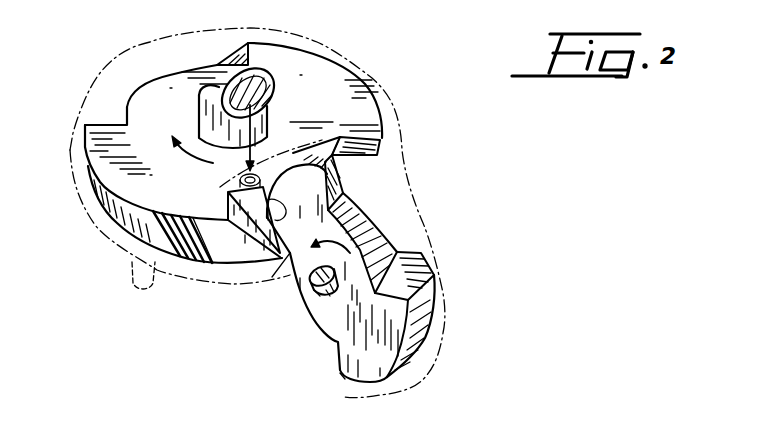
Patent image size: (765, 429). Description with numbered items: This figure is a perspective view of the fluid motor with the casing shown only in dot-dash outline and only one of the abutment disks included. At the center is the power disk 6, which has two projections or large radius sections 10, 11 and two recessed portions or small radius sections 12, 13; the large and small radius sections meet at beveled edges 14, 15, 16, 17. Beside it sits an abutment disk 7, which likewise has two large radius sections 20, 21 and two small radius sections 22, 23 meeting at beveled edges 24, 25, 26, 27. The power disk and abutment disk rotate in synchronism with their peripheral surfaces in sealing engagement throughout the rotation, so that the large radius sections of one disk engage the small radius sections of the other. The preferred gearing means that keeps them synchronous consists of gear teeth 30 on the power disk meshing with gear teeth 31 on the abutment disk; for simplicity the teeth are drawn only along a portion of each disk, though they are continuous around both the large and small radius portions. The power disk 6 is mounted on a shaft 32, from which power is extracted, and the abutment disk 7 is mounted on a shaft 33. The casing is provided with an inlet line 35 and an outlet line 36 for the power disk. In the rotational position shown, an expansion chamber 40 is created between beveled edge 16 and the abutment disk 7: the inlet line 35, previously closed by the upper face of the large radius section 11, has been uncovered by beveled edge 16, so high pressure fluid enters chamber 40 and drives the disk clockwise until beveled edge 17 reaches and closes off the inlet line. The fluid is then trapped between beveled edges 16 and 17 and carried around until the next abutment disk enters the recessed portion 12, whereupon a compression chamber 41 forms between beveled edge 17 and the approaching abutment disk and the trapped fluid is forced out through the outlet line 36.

The power disk 6 is at (363, 80).
The abutment disk 7 is at (437, 293).
The large radius section 10 is at (337, 112).
The large radius section 11 is at (168, 198).
The small radius section 12 is at (289, 158).
The small radius section 13 is at (185, 108).
The beveled edge 14 is at (241, 58).
The beveled edge 15 is at (116, 124).
The beveled edge 16 is at (260, 233).
The beveled edge 17 is at (343, 194).
The large radius section 20 is at (309, 205).
The large radius section 21 is at (386, 365).
The small radius section 22 is at (340, 323).
The small radius section 23 is at (367, 288).
The beveled edge 24 is at (335, 183).
The beveled edge 25 is at (272, 280).
The beveled edge 26 is at (338, 353).
The beveled edge 27 is at (412, 262).
The gear teeth 30 is at (184, 258).
The gear teeth 31 is at (367, 208).
The shaft 32 is at (272, 102).
The shaft 33 is at (318, 284).
The inlet line 35 is at (238, 180).
The outlet line 36 is at (130, 280).
The expansion chamber 40 is at (265, 235).
The compression chamber 41 is at (379, 153).